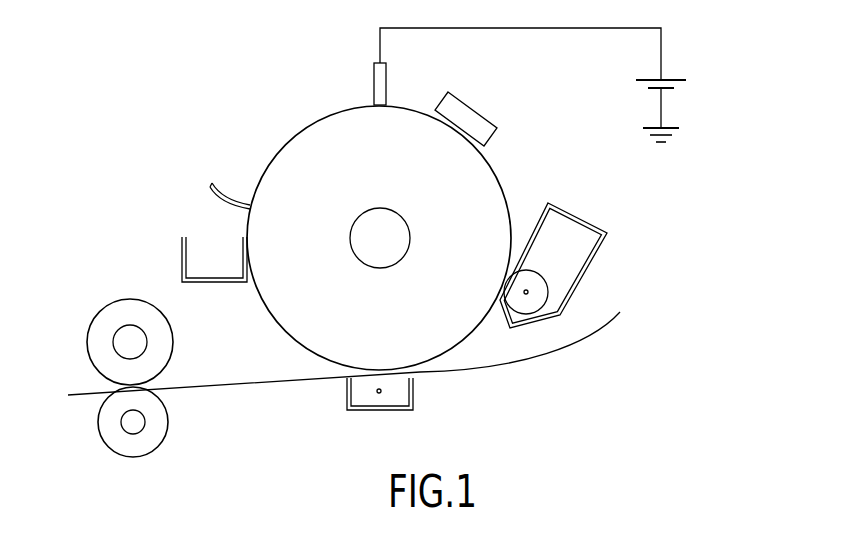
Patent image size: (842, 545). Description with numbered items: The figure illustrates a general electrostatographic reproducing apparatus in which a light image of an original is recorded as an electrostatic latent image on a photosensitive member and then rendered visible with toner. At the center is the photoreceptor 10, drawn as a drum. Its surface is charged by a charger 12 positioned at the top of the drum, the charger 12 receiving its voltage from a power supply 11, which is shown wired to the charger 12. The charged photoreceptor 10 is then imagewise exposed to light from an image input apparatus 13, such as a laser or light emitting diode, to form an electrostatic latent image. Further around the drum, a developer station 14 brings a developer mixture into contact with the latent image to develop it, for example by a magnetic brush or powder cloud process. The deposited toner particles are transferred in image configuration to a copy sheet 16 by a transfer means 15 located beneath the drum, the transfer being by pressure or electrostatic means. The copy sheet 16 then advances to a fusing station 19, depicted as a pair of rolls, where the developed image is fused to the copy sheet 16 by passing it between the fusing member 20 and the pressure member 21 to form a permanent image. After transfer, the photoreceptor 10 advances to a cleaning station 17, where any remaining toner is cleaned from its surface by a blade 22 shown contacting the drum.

The photoreceptor 10 is at (502, 178).
The power supply 11 is at (663, 65).
The charger 12 is at (373, 80).
The image input apparatus 13 is at (483, 115).
The developer station 14 is at (568, 238).
The transfer means 15 is at (413, 398).
The copy sheet 16 is at (602, 325).
The cleaning station 17 is at (200, 220).
The fusing station 19 is at (98, 298).
The fusing member 20 is at (167, 330).
The pressure member 21 is at (163, 427).
The blade 22 is at (222, 182).